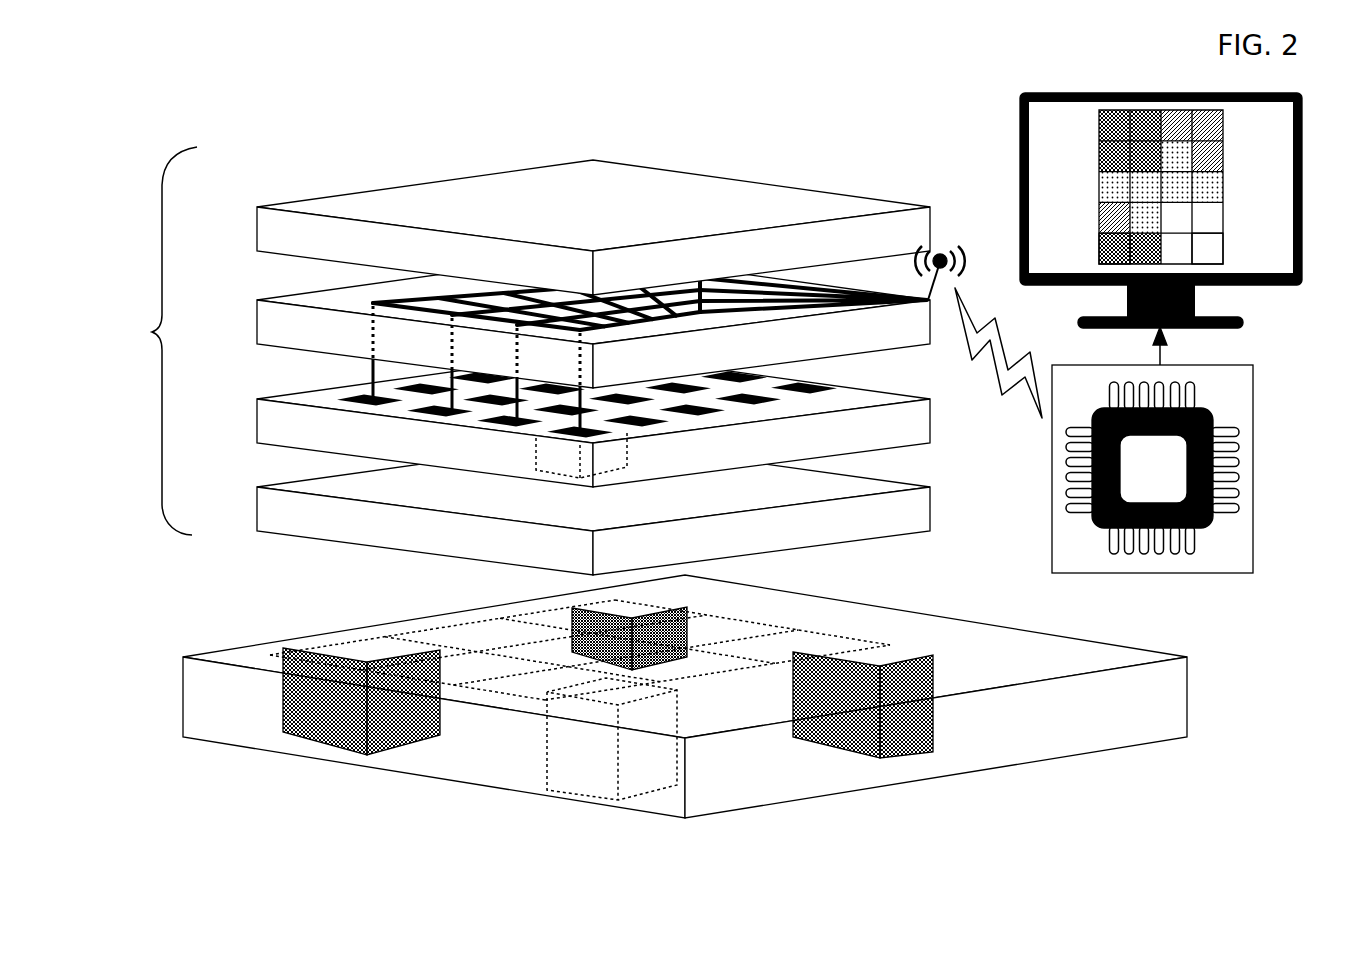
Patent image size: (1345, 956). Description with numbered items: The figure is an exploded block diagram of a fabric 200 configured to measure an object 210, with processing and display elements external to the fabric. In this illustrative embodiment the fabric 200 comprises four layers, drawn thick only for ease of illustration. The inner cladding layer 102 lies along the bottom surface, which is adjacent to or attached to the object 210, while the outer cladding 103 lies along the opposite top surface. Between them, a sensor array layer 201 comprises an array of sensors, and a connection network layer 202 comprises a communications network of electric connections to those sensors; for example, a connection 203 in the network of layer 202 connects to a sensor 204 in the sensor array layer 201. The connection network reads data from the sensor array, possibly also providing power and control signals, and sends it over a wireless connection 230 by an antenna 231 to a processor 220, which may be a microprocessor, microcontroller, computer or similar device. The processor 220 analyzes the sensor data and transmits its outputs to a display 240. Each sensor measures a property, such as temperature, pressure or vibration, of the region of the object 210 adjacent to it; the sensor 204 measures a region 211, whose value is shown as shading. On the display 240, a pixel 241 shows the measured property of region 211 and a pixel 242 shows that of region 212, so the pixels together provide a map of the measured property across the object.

The inner cladding layer 102 is at (328, 530).
The outer cladding 103 is at (658, 192).
The fabric 200 is at (152, 341).
The sensor array layer 201 is at (267, 412).
The connection network layer 202 is at (262, 323).
The connection 203 is at (373, 368).
The sensor 204 is at (368, 376).
The object 210 is at (1140, 707).
The region 211 is at (308, 720).
The region 212 is at (590, 760).
The processor 220 is at (1255, 548).
The wireless connection 230 is at (1017, 390).
The antenna 231 is at (950, 240).
The display 240 is at (1017, 143).
The pixel 241 is at (1113, 248).
The pixel 242 is at (1212, 251).